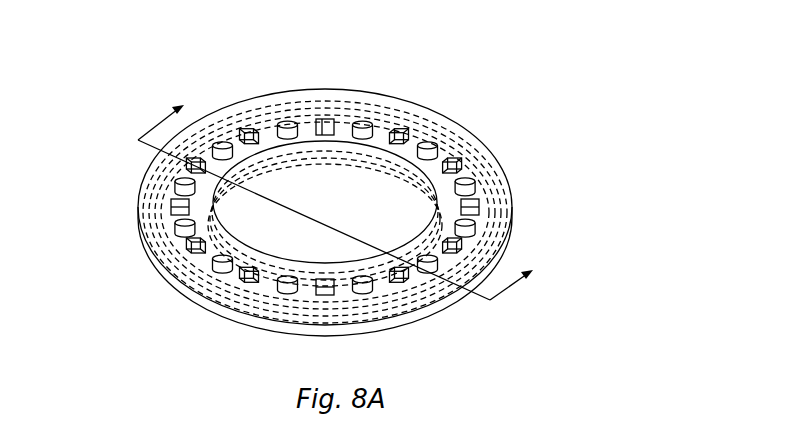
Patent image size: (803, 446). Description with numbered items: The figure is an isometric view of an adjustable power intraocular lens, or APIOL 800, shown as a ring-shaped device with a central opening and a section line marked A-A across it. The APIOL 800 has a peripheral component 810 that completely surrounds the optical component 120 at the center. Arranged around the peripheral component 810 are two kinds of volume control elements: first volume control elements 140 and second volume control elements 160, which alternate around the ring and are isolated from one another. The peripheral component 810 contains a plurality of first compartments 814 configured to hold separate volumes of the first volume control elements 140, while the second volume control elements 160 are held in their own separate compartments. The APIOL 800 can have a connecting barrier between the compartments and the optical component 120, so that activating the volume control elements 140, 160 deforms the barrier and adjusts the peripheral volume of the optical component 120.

The APIOL 800 is at (557, 121).
The peripheral component 810 is at (244, 106).
The optical component 120 is at (268, 227).
The first compartments 814 is at (303, 303).
The first volume control elements 140 is at (362, 291).
The second volume control elements 160 is at (404, 134).